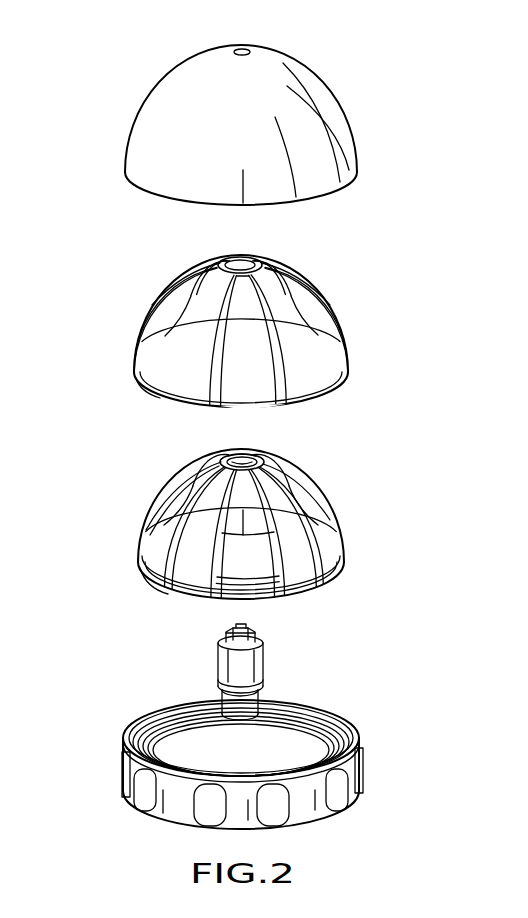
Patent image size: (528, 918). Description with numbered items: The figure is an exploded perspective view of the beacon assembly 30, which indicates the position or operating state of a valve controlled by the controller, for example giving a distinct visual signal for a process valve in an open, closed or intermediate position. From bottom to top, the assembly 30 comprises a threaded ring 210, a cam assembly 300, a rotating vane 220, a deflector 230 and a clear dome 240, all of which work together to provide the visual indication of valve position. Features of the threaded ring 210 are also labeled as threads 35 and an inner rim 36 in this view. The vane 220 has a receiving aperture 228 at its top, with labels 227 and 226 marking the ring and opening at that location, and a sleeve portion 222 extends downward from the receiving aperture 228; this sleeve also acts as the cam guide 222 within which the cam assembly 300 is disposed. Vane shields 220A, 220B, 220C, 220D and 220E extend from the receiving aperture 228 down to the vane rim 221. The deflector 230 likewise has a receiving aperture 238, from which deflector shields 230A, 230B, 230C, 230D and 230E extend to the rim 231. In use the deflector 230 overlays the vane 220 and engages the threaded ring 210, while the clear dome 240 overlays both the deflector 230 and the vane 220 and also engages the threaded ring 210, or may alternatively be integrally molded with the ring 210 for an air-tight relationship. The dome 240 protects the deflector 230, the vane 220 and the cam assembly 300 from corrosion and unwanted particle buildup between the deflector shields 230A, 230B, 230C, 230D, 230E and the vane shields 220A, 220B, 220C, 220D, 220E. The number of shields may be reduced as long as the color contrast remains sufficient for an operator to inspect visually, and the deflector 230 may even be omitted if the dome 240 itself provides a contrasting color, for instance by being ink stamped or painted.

The beacon assembly 30 is at (445, 235).
The clear dome 240 is at (316, 110).
The receiving aperture 238 is at (238, 262).
The deflector 230 is at (322, 296).
The deflector shield 230A is at (345, 345).
The deflector shield 230B is at (280, 385).
The deflector shield 230C is at (152, 325).
The deflector shield 230D is at (160, 390).
The deflector shield 230E is at (285, 272).
The rim 231 is at (133, 385).
The top ring 227 is at (232, 458).
The top opening 226 is at (250, 455).
The receiving aperture 228 is at (218, 462).
The rotating vane 220 is at (312, 565).
The vane shield 220A is at (280, 500).
The vane shield 220B is at (187, 562).
The vane shield 220C is at (142, 533).
The vane shield 220D is at (175, 505).
The vane shield 220E is at (330, 510).
The vane rim 221 is at (148, 567).
The sleeve portion 222 is at (243, 510).
The cam assembly 300 is at (265, 662).
The threads 35 is at (178, 733).
The inner rim 36 is at (348, 733).
The threaded ring 210 is at (360, 795).